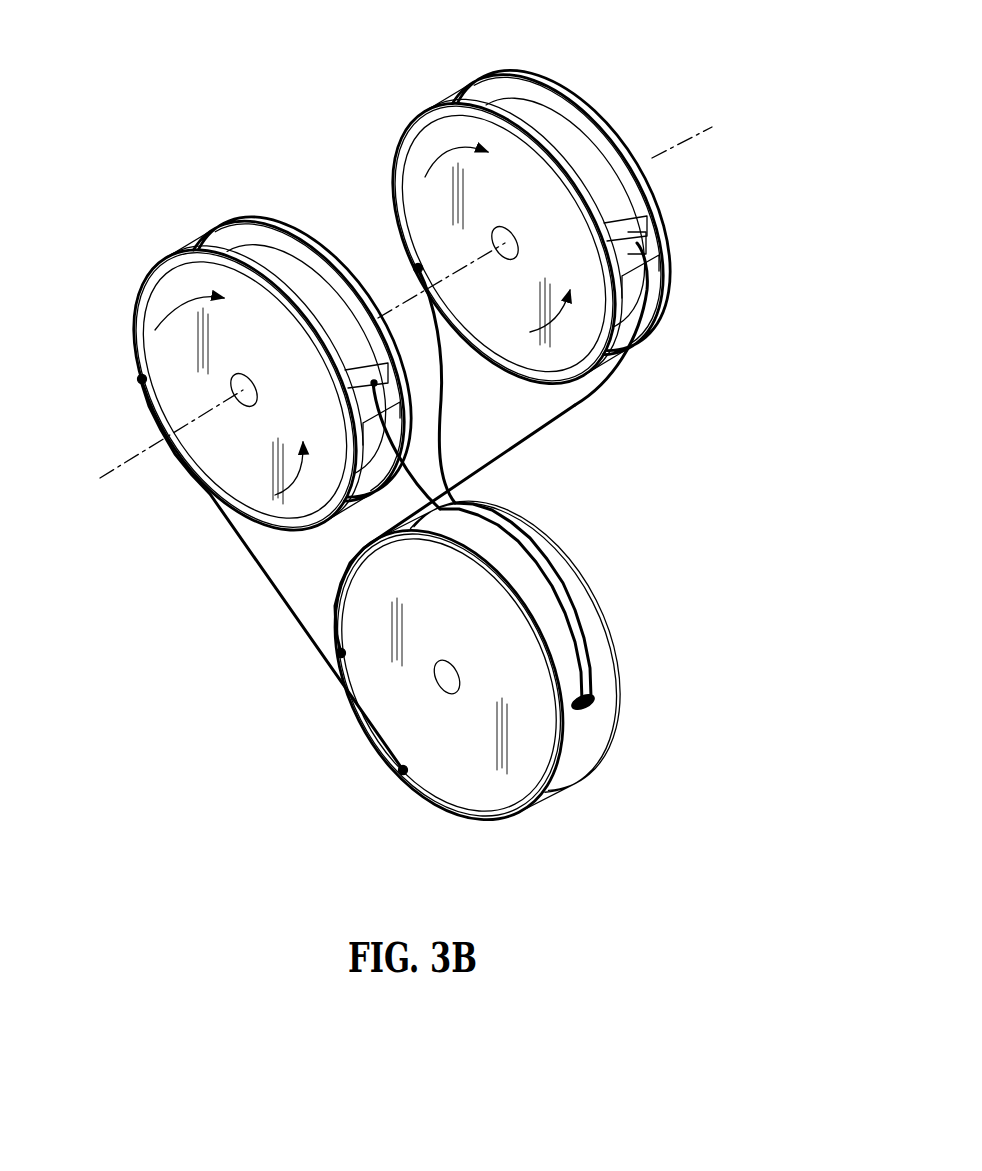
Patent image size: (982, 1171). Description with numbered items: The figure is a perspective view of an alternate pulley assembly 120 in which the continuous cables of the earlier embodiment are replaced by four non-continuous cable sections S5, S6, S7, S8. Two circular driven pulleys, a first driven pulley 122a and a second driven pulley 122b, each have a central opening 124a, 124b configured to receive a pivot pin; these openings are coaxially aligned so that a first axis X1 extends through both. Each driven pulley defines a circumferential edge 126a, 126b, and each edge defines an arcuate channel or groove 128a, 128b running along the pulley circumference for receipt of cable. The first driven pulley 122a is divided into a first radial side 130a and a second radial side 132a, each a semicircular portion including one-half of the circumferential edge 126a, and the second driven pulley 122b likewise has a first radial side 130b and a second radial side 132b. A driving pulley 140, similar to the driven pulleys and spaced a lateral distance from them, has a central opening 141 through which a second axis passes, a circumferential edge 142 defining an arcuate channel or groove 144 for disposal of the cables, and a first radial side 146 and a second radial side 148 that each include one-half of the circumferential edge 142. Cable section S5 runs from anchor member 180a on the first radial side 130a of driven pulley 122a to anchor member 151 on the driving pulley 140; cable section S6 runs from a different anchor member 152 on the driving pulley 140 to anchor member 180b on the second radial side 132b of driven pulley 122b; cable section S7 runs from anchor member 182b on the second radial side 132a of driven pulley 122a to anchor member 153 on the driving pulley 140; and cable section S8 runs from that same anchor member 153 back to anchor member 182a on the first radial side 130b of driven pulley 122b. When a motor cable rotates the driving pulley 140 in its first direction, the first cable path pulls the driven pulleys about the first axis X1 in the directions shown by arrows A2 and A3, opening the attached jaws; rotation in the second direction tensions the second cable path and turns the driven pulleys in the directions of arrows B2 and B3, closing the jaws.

The pulley assembly 120 is at (588, 456).
The first driven pulley 122a is at (263, 370).
The central opening 124a is at (232, 395).
The circumferential edge 126a is at (140, 295).
The arcuate channel or groove 128a is at (258, 235).
The first radial side 130a is at (160, 362).
The second radial side 132a is at (260, 323).
The anchor member 180a is at (138, 378).
The anchor member 182a is at (414, 264).
The second driven pulley 122b is at (532, 212).
The central opening 124b is at (507, 235).
The circumferential edge 126b is at (505, 110).
The arcuate channel or groove 128b is at (562, 105).
The first radial side 130b is at (413, 180).
The second radial side 132b is at (553, 174).
The anchor member 180b is at (652, 242).
The anchor member 182b is at (385, 379).
The driving pulley 140 is at (473, 660).
The central opening 141 is at (457, 697).
The circumferential edge 142 is at (340, 664).
The arcuate channel or groove 144 is at (525, 549).
The first radial side 146 is at (400, 725).
The second radial side 148 is at (525, 664).
The anchor member 151 is at (402, 778).
The anchor member 152 is at (346, 654).
The anchor member 153 is at (592, 695).
The cable section S5 is at (232, 537).
The cable section S6 is at (338, 599).
The cable section S7 is at (395, 487).
The cable section S8 is at (447, 407).
The first axis X1 is at (417, 294).
The arrow (first-direction rotation of first driven pulley) A2 is at (297, 473).
The arrow (second-direction rotation of first driven pulley) B2 is at (189, 304).
The arrow (first-direction rotation of second driven pulley) A3 is at (456, 149).
The arrow (second-direction rotation of second driven pulley) B3 is at (557, 319).